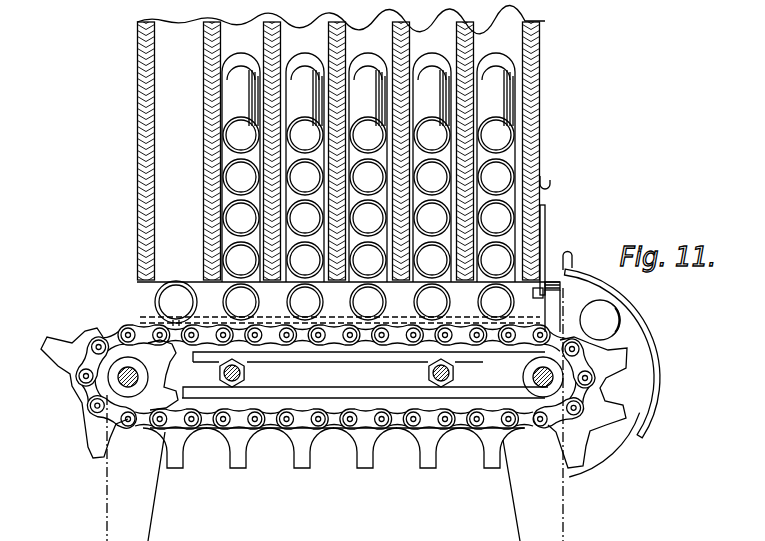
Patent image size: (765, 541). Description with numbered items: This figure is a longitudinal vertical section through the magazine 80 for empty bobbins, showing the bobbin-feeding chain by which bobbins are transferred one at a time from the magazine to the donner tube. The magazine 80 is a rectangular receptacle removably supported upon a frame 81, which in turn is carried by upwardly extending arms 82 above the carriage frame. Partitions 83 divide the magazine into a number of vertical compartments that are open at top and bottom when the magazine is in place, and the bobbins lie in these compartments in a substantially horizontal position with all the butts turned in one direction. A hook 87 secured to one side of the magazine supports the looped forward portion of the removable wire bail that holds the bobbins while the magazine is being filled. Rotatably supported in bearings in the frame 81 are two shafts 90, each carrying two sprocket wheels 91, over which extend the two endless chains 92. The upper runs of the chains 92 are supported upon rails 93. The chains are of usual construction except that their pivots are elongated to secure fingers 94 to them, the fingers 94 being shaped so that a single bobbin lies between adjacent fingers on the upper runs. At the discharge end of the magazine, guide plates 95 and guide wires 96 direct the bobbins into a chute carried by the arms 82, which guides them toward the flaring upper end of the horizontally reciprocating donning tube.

The magazine 80 is at (126, 151).
The frame 81 is at (357, 381).
The upwardly extending arms 82 is at (115, 495).
The partitions 83 is at (266, 21).
The hook 87 is at (552, 184).
The shafts 90 is at (118, 380).
The sprocket wheels 91 is at (157, 390).
The endless chains 92 is at (303, 420).
The rails 93 is at (312, 353).
The fingers 94 is at (547, 288).
The guide plates 95 is at (617, 427).
The guide wires 96 is at (656, 398).